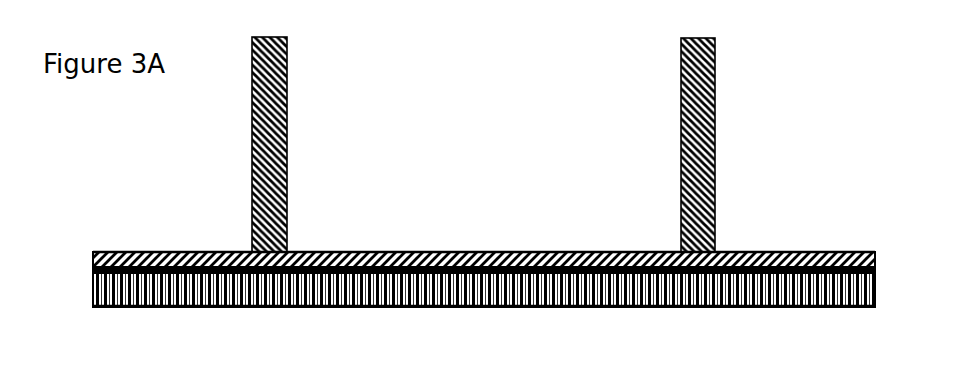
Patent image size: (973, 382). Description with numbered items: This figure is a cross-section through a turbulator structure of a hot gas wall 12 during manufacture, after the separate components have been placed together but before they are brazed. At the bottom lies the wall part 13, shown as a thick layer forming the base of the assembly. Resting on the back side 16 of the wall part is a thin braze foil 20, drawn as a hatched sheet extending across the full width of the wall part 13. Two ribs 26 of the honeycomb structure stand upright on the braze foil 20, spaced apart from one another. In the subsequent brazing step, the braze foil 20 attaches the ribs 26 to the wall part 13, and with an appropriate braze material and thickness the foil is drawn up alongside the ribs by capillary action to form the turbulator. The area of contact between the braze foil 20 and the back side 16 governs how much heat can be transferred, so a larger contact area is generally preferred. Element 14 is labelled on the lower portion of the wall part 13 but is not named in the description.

The hot gas wall 12 is at (529, 206).
The wall part 13 is at (778, 285).
The bottom surface of substrate 14 is at (698, 307).
The back side 16 is at (510, 263).
The braze foil 20 is at (822, 253).
The ribs 26 is at (283, 113).